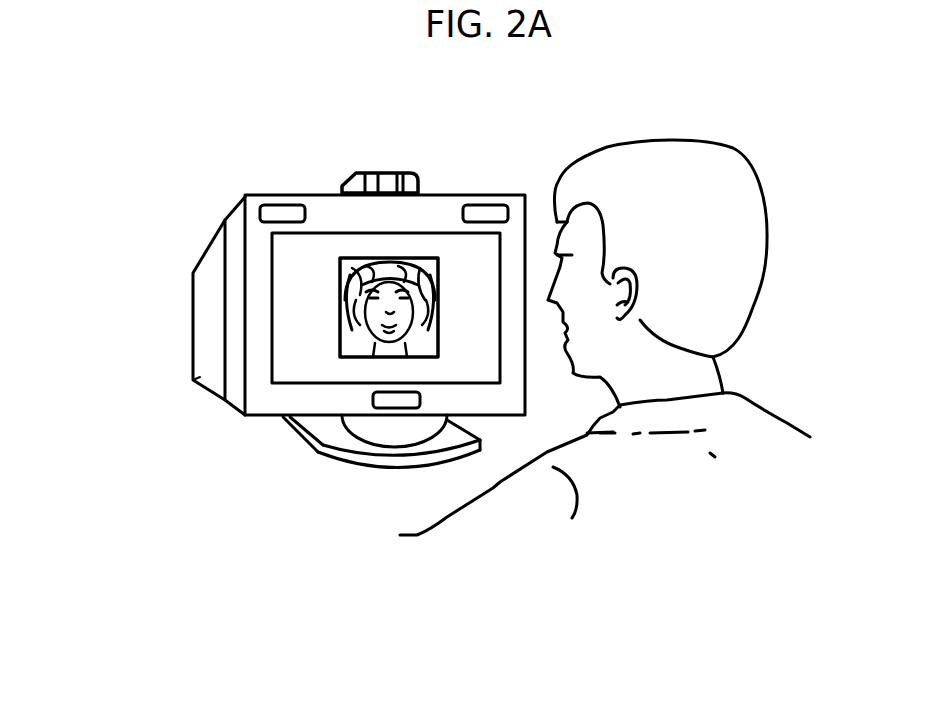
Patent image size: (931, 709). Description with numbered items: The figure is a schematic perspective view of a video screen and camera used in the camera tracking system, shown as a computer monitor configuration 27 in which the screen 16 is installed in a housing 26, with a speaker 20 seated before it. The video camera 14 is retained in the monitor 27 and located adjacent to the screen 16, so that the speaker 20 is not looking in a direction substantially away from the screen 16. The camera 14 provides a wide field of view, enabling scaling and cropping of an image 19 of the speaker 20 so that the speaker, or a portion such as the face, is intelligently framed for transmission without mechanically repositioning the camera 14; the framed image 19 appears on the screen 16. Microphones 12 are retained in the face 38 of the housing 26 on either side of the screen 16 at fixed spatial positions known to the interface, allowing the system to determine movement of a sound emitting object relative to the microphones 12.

The microphones 12 is at (275, 202).
The video camera 14 is at (397, 167).
The screen 16 is at (295, 345).
The image 19 is at (340, 313).
The speaker 20 is at (712, 455).
The housing 26 is at (205, 343).
The computer monitor configuration 27 is at (193, 300).
The face 38 is at (328, 203).